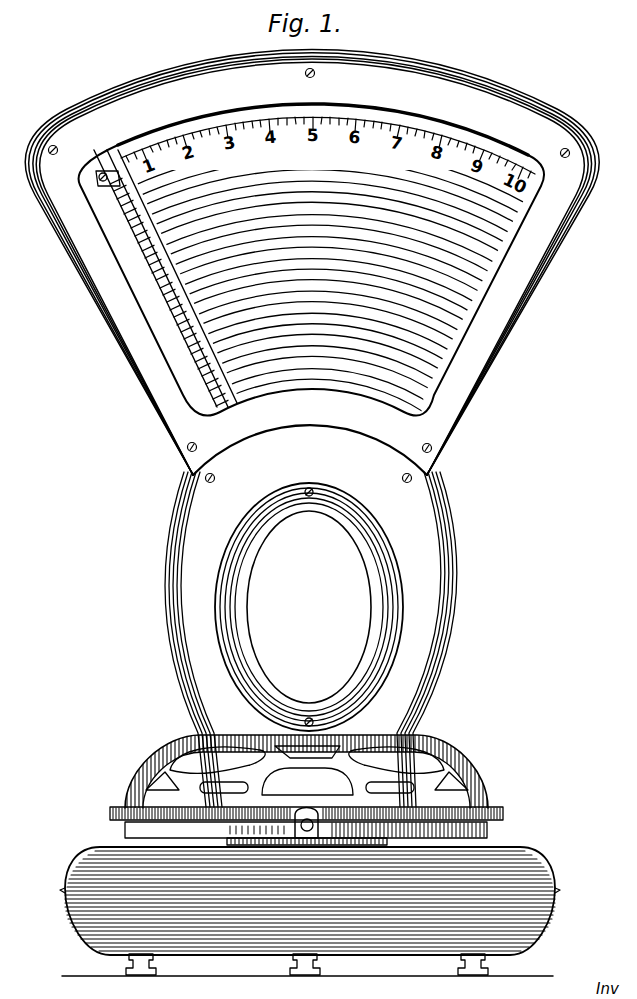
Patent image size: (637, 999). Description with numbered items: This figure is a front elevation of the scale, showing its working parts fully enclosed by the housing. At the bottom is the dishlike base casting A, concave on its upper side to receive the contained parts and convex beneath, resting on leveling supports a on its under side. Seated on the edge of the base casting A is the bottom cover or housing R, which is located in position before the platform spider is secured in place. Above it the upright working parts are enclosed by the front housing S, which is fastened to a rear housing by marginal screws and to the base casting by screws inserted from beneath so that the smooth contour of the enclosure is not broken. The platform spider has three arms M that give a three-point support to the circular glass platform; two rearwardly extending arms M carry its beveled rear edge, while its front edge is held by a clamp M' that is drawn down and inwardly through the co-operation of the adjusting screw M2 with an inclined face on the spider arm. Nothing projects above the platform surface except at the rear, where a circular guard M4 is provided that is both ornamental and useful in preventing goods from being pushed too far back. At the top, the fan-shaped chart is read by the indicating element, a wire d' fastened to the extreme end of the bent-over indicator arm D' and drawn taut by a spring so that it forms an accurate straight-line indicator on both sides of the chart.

The end of the indicator arm D' is at (165, 263).
The wire d' is at (169, 292).
The front housing S is at (243, 583).
The circular guard M4 is at (448, 752).
The arms M is at (301, 824).
The clamp M' is at (338, 814).
The adjusting screw M2 is at (304, 841).
The bottom cover or housing R is at (538, 863).
The base casting A is at (74, 912).
The leveling supports a is at (126, 965).